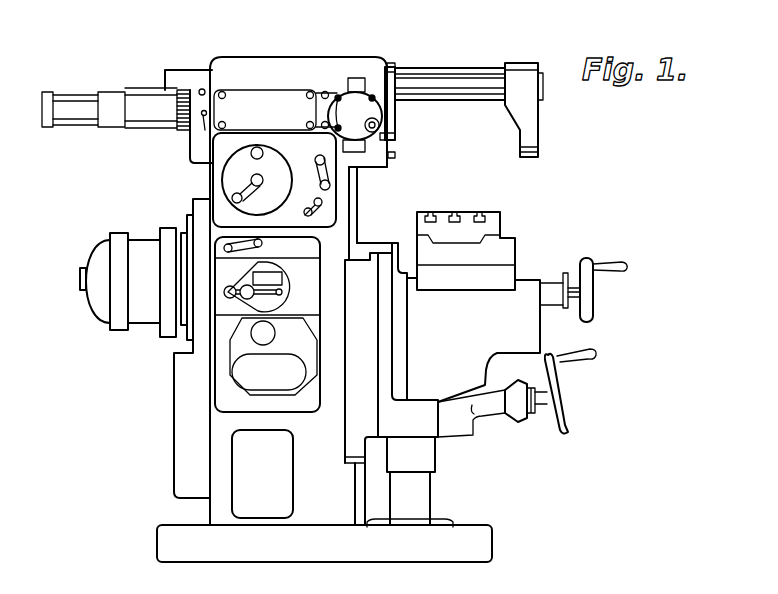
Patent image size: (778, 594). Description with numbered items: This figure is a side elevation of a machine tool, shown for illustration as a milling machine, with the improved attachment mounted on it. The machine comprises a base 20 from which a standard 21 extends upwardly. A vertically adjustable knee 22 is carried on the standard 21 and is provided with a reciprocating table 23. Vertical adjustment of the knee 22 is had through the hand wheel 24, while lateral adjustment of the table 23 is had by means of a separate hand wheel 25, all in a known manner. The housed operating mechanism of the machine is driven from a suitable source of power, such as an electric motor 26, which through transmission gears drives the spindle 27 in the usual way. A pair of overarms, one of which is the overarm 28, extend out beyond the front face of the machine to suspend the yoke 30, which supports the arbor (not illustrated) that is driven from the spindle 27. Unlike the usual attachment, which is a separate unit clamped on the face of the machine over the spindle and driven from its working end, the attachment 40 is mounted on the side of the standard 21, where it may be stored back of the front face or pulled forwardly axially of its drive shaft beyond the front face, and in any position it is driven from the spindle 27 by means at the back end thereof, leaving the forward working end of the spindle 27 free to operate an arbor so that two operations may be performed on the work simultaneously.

The base 20 is at (160, 550).
The standard 21 is at (220, 428).
The knee 22 is at (528, 325).
The table 23 is at (502, 258).
The hand wheel 24 is at (558, 400).
The hand wheel 25 is at (588, 288).
The electric motor 26 is at (138, 252).
The spindle 27 is at (395, 147).
The overarm 28 is at (430, 75).
The yoke 30 is at (532, 113).
The attachment 40 is at (350, 100).